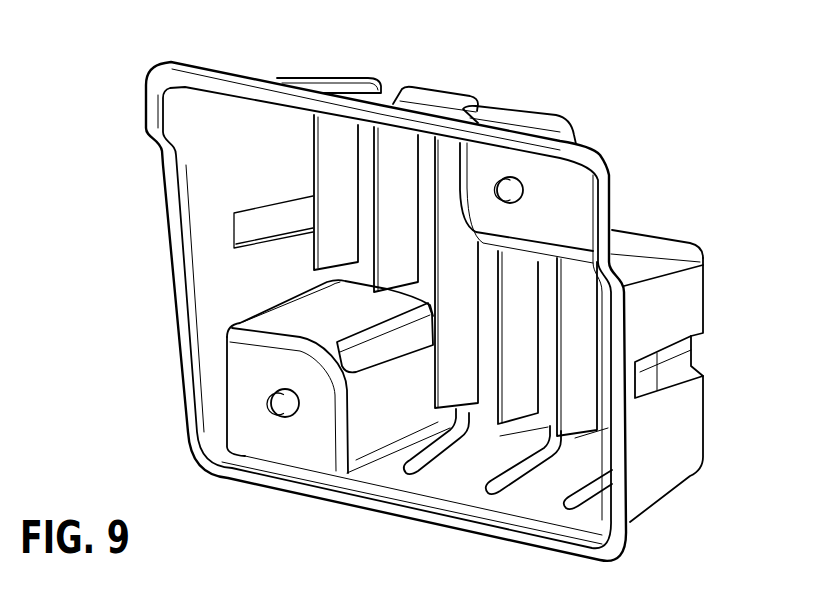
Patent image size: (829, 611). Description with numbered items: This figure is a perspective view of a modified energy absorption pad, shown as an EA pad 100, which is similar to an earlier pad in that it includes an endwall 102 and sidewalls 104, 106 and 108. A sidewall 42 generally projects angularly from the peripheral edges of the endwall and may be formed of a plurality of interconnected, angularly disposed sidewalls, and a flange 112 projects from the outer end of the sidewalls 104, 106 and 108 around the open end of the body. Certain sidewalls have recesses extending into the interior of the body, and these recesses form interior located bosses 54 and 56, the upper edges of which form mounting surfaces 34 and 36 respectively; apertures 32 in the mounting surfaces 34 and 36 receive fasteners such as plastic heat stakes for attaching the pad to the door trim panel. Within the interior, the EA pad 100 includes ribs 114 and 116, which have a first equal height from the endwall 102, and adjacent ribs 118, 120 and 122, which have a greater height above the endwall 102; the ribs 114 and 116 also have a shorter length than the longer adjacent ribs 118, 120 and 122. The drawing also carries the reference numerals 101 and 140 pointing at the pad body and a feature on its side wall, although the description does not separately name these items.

The EA pad 100 is at (438, 72).
The housing body 101 is at (175, 318).
The flange 112 is at (190, 394).
The tab 140 is at (212, 180).
The rib 114 is at (333, 178).
The rib 116 is at (393, 182).
The sidewall 104 is at (430, 99).
The endwall 102 is at (427, 167).
The mounting surface 36 is at (552, 195).
The aperture 32 is at (522, 186).
The rib 118 is at (462, 398).
The rib 120 is at (523, 397).
The rib 122 is at (577, 390).
The boss 54 is at (337, 318).
The mounting surface 34 is at (243, 417).
The sidewall 108 is at (458, 478).
The boss 56 is at (632, 240).
The sidewall 42 is at (684, 290).
The sidewall 106 is at (703, 397).